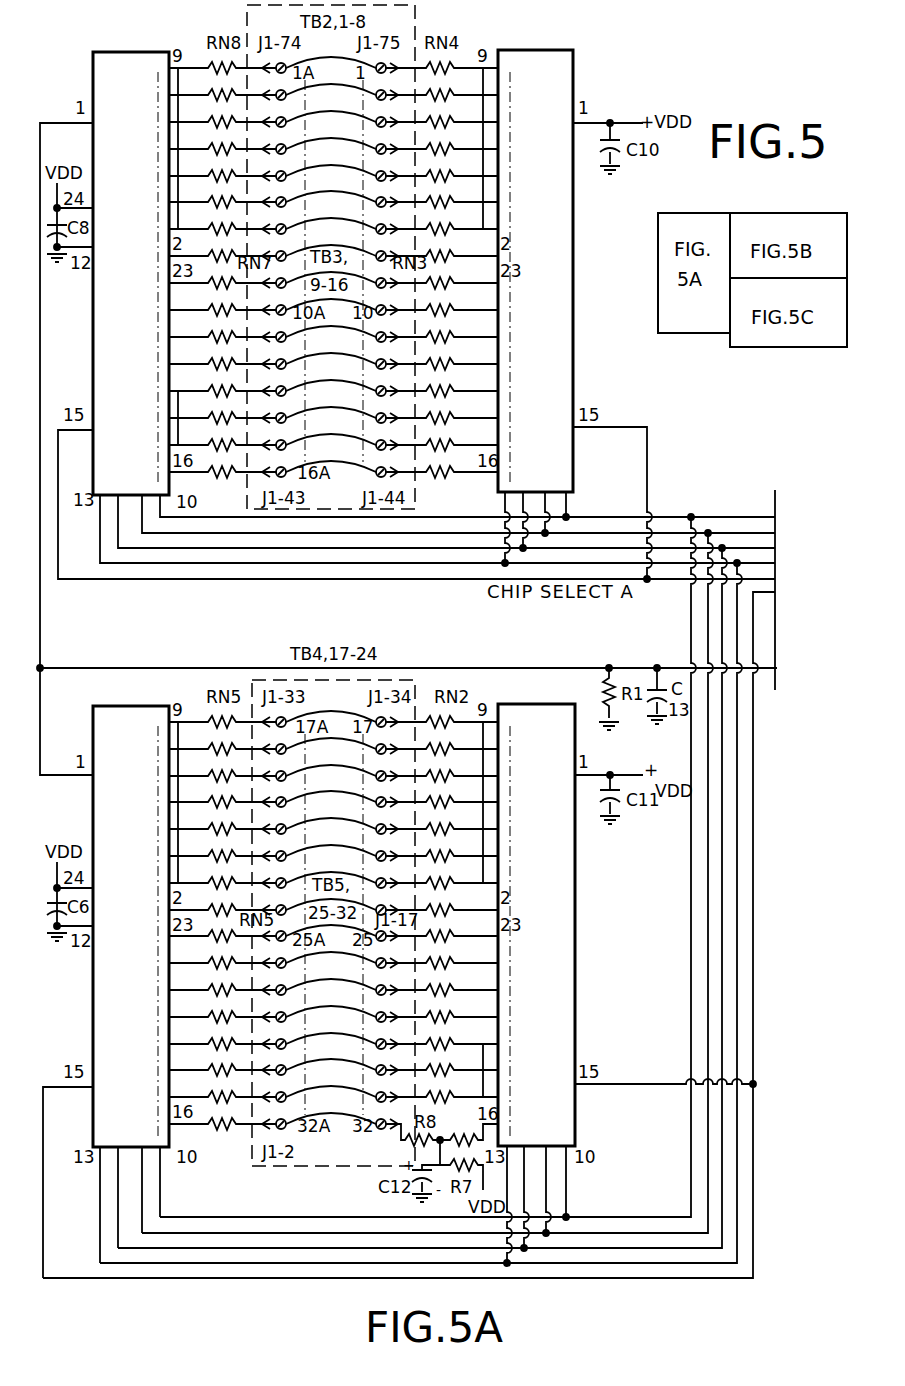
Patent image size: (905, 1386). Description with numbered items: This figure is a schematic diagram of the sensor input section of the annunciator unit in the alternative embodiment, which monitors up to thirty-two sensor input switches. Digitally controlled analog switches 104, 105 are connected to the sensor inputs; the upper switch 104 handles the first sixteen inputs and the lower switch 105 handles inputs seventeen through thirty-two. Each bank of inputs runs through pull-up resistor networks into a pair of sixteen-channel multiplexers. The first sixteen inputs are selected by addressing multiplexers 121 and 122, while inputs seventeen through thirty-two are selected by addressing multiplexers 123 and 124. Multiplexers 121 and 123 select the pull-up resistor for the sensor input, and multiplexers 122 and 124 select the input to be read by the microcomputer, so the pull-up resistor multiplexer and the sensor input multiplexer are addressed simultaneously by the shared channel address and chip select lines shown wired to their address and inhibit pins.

The digitally controlled analog switch 104 is at (323, 512).
The digitally controlled analog switch 105 is at (415, 680).
The multiplexer 121 is at (560, 310).
The multiplexer 122 is at (141, 310).
The multiplexer 123 is at (560, 971).
The multiplexer 124 is at (141, 971).